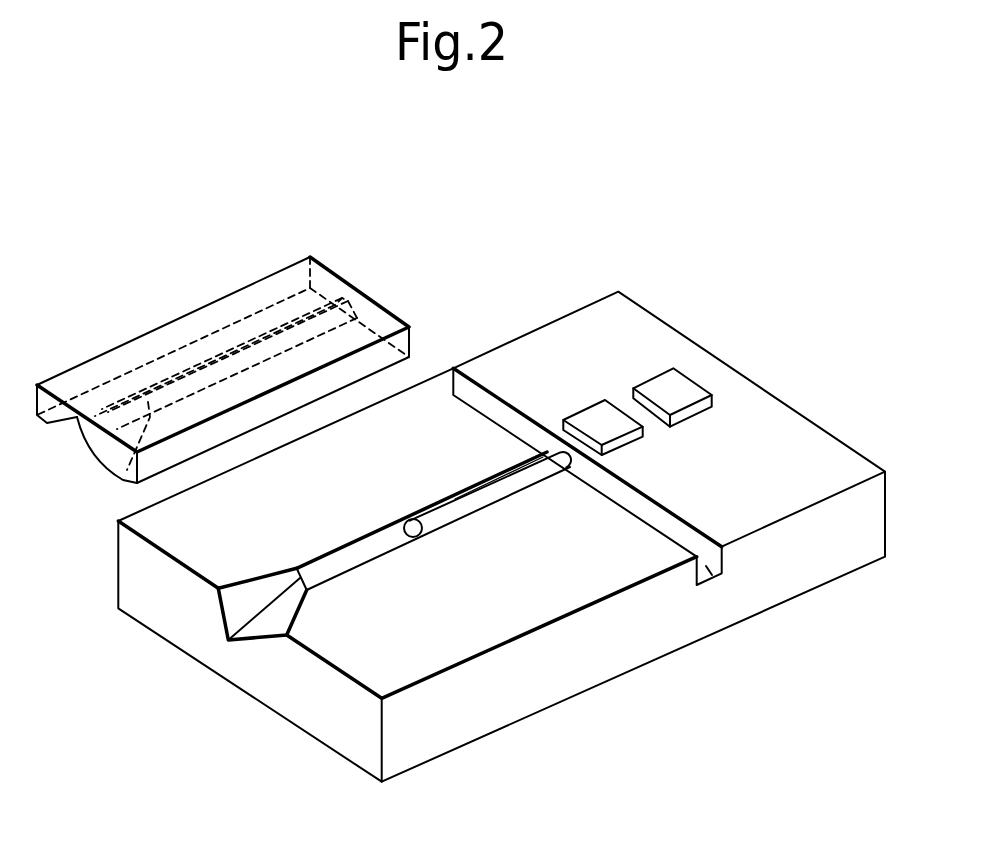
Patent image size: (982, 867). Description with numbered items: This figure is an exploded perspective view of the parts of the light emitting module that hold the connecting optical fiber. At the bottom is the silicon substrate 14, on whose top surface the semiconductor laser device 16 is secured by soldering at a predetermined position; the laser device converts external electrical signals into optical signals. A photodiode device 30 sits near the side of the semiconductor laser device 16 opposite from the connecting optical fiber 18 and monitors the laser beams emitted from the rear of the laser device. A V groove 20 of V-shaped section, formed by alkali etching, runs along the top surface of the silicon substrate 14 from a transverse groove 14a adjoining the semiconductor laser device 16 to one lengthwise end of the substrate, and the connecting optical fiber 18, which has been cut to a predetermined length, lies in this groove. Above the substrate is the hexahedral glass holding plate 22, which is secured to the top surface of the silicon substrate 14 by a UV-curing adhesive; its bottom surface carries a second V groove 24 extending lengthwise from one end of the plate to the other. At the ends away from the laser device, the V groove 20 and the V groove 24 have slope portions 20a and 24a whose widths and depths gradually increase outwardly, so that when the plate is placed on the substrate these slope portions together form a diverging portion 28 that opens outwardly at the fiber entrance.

The silicon substrate 14 is at (767, 413).
The transverse groove 14a is at (712, 578).
The semiconductor laser device 16 is at (593, 417).
The photodiode device 30 is at (673, 388).
The connecting optical fiber 18 is at (508, 483).
The V groove 20 is at (362, 552).
The slope portion 20a is at (248, 615).
The holding plate 22 is at (262, 312).
The V groove 24 is at (190, 390).
The slope portion 24a is at (83, 442).
The diverging portion 28 is at (107, 734).